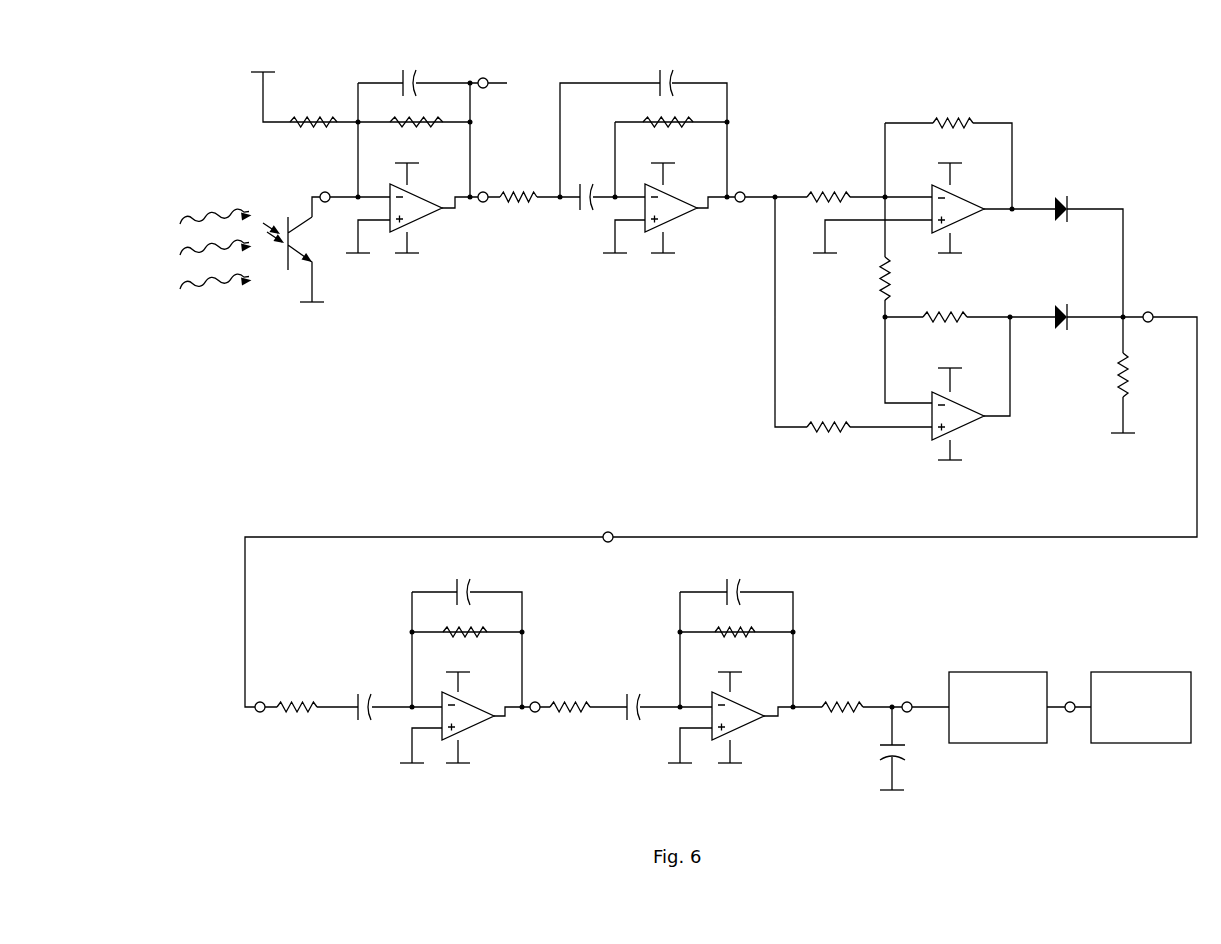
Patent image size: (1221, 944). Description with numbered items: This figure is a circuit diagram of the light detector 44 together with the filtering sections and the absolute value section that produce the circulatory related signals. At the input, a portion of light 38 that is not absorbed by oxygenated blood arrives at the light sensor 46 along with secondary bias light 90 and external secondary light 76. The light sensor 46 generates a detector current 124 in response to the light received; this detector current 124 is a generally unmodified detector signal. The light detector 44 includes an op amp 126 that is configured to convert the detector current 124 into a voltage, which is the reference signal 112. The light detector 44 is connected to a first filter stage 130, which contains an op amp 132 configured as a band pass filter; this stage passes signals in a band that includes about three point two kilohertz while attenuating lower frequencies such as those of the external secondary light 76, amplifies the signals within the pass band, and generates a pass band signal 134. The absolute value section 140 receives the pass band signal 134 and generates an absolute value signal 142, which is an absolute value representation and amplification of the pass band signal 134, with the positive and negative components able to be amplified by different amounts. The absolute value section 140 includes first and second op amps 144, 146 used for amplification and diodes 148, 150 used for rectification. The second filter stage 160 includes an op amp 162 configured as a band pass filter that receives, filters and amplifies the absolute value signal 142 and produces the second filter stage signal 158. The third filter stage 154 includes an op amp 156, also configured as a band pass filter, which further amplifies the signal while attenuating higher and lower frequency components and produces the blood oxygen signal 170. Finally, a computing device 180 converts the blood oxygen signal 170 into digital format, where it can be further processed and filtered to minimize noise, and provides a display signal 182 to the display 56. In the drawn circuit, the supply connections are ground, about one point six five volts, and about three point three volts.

The light 38 is at (200, 219).
The secondary bias light 90 is at (200, 250).
The external secondary light 76 is at (200, 285).
The light sensor 46 is at (284, 261).
The detector current 124 is at (325, 192).
The op amp 126 is at (418, 222).
The reference signal 112 is at (486, 79).
The light detector 44 is at (364, 187).
The first filter stage 130 is at (672, 193).
The operational amplifier 132 is at (672, 222).
The pass band signal 134 is at (742, 191).
The absolute value section 140 is at (958, 304).
The first op amp 144 is at (963, 222).
The second op amp 146 is at (963, 430).
The diode 148 is at (1068, 199).
The diode 150 is at (1068, 327).
The absolute value signal 142 is at (1152, 312).
The second filter stage 160 is at (494, 700).
The op amp 162 is at (472, 730).
The second filter stage signal 158 is at (537, 713).
The third filter stage 154 is at (773, 704).
The op amp 156 is at (745, 730).
The blood oxygen signal 170 is at (907, 702).
The computing device 180 is at (973, 743).
The display signal 182 is at (1070, 713).
The display 56 is at (1130, 672).